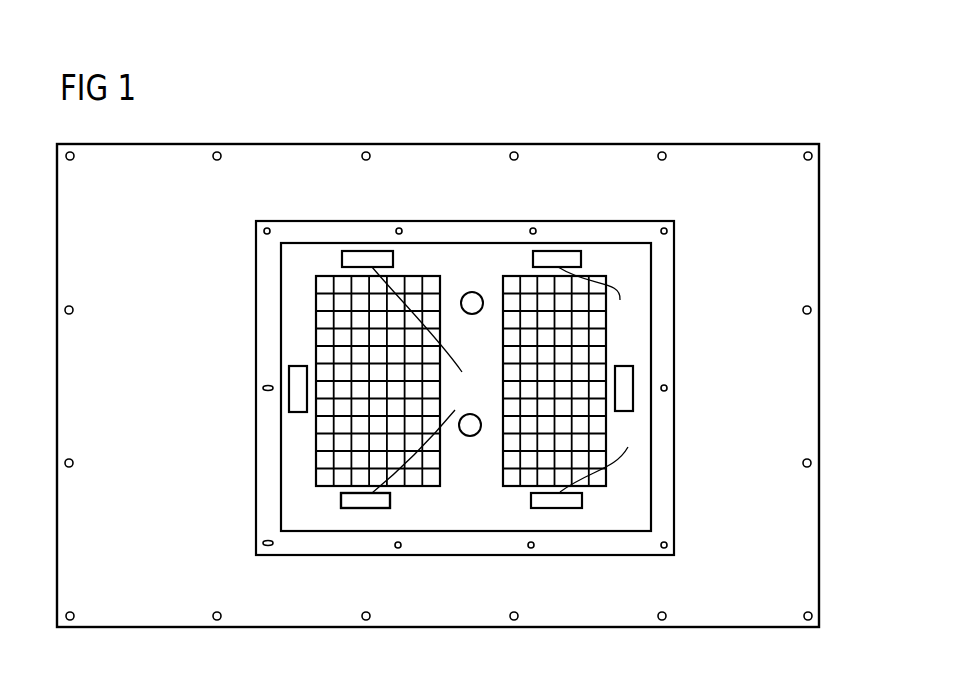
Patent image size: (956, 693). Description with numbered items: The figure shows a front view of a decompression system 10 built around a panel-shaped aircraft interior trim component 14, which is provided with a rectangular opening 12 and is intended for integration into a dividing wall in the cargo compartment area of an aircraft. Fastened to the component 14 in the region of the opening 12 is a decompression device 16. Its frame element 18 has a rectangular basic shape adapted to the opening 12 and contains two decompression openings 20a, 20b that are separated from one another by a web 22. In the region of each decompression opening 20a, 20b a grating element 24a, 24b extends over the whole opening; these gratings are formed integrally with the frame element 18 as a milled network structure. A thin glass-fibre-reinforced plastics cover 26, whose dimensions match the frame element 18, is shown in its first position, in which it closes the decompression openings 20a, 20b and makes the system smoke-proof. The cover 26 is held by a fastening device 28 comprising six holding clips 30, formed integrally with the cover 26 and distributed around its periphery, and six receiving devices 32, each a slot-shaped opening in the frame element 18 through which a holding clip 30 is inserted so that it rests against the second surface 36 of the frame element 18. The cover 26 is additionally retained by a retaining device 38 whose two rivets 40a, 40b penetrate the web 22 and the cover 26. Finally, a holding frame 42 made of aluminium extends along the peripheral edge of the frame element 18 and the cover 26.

The decompression system 10 is at (752, 122).
The opening 12 is at (312, 229).
The component 14 is at (267, 158).
The decompression device 16 is at (700, 290).
The frame element 18 is at (496, 262).
The decompression opening 20a is at (321, 381).
The decompression opening 20b is at (618, 381).
The web 22 is at (455, 520).
The grating element 24a is at (340, 290).
The grating element 24b is at (570, 338).
The cover 26 is at (415, 300).
The fastening device 28 is at (334, 522).
The holding clip 30 is at (368, 256).
The receiving device 32 is at (615, 387).
The second surface 36 is at (633, 483).
The retaining device 38 is at (468, 282).
The rivet 40a is at (472, 305).
The rivet 40b is at (470, 427).
The holding frame 42 is at (480, 545).